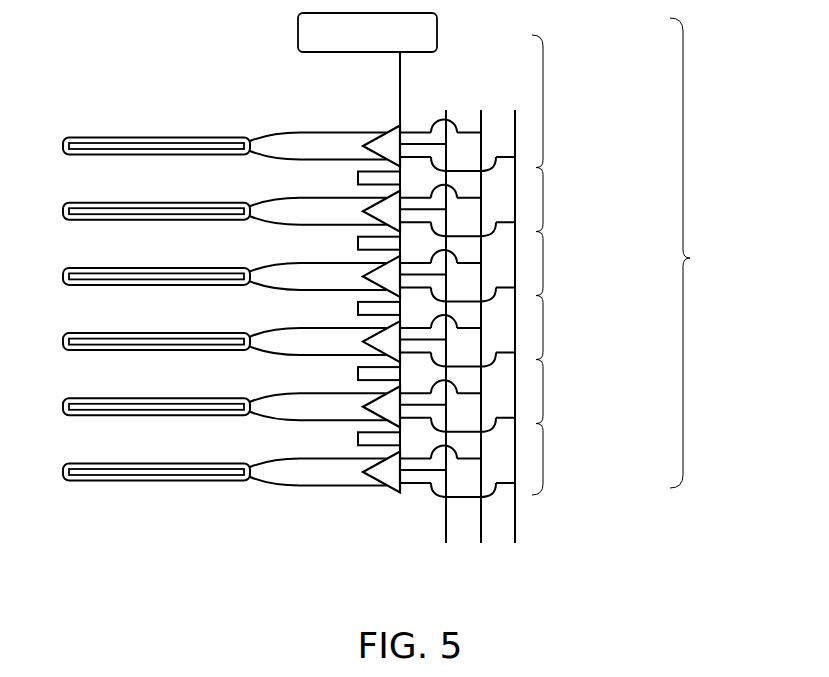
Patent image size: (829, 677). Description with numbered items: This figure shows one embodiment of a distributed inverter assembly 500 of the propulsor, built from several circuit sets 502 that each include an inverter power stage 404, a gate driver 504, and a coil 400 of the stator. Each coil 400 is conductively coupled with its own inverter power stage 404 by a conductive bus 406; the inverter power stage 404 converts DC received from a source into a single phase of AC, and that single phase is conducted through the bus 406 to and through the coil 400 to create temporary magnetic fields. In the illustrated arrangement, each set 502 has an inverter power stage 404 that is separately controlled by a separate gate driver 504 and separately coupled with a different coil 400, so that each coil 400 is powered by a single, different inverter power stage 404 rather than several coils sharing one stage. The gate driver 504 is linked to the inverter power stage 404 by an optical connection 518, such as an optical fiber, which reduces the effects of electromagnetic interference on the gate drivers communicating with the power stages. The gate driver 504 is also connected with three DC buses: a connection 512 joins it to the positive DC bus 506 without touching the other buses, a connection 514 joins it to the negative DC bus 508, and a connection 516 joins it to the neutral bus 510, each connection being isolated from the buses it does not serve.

The gate driver 504 is at (298, 30).
The optical connection 518 is at (399, 110).
The coil 400 is at (168, 138).
The conductive bus 406 is at (277, 133).
The inverter power stage 404 is at (392, 493).
The connection with the neutral bus 516 is at (418, 132).
The connection with the positive DC bus 512 is at (457, 120).
The connection with the negative DC bus 514 is at (497, 155).
The neutral bus 510 is at (443, 518).
The positive DC bus 506 is at (483, 527).
The negative DC bus 508 is at (515, 527).
The circuit set 502 is at (543, 99).
The distributed inverter assembly 500 is at (690, 258).